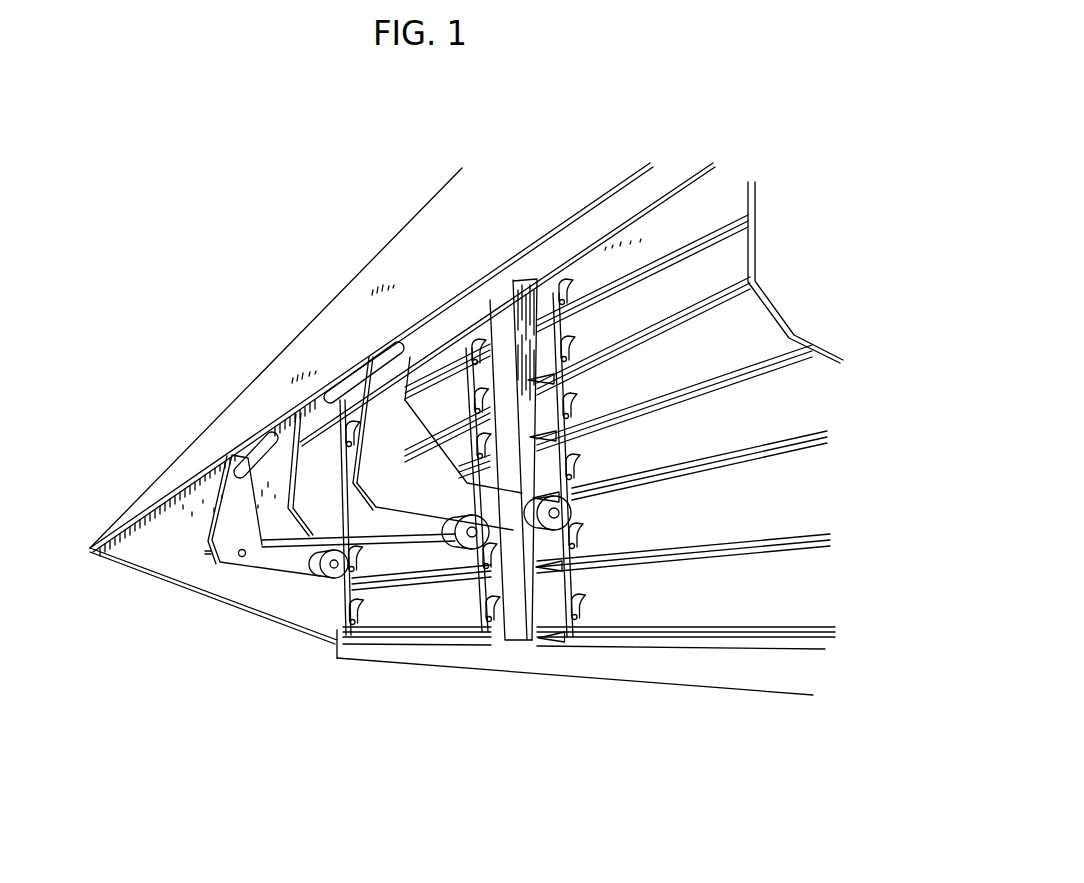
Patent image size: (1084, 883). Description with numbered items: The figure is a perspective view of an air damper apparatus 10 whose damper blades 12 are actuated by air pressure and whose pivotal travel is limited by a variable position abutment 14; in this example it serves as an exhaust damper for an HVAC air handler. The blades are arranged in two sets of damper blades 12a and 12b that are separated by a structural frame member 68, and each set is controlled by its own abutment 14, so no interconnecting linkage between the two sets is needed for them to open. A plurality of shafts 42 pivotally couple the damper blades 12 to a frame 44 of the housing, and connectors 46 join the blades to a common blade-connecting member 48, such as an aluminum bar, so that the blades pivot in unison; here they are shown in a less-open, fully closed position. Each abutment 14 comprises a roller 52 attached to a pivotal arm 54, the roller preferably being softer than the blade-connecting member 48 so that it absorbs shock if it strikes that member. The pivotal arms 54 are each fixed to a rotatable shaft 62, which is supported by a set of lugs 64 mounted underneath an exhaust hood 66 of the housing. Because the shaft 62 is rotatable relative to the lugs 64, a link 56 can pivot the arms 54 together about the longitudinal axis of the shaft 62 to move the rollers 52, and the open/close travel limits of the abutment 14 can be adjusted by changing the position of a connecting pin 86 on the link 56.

The air damper apparatus 10 is at (213, 746).
The damper blades 12 is at (375, 555).
The first set of damper blades 12a is at (695, 670).
The second set of damper blades 12b is at (412, 660).
The variable position abutment 14 is at (585, 508).
The shafts 42 is at (445, 352).
The frame 44 is at (533, 602).
The connectors 46 is at (590, 442).
The blade-connecting member 48 is at (560, 290).
The roller 52 is at (578, 518).
The pivotal arm 54 is at (207, 532).
The link 56 is at (318, 542).
The rotatable shaft 62 is at (352, 385).
The lugs 64 is at (262, 440).
The exhaust hood 66 is at (357, 290).
The structural frame member 68 is at (500, 332).
The connecting pin 86 is at (242, 557).